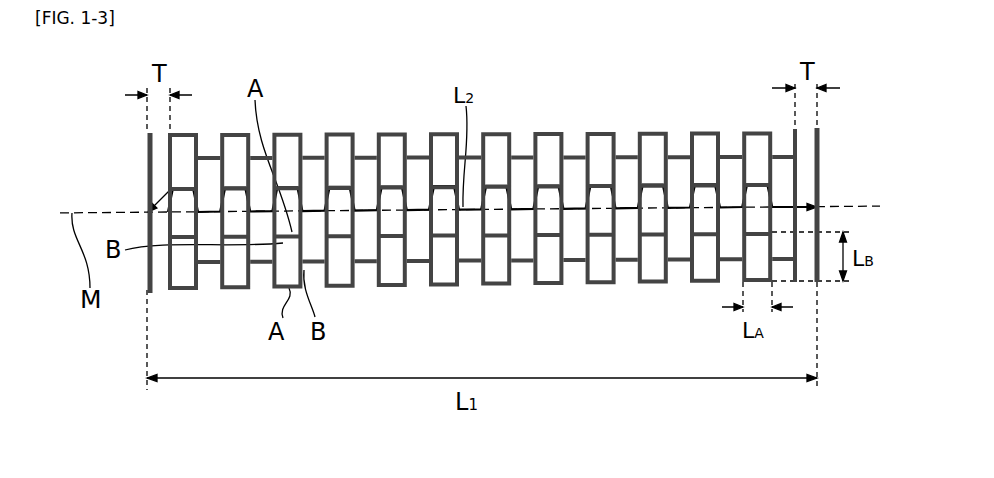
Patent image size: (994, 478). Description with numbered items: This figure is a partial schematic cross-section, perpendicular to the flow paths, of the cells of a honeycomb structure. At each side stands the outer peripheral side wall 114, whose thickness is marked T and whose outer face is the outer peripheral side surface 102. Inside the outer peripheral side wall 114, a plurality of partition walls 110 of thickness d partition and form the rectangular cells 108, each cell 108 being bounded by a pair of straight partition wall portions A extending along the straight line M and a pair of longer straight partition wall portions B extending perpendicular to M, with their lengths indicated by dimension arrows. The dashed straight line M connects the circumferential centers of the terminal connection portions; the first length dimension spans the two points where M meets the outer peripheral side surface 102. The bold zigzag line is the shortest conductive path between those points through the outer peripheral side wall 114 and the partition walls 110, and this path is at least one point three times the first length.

The outer peripheral side surface 102 is at (150, 178).
The cell 108 is at (287, 143).
The partition wall 110 is at (393, 285).
The outer peripheral side wall 114 is at (152, 147).